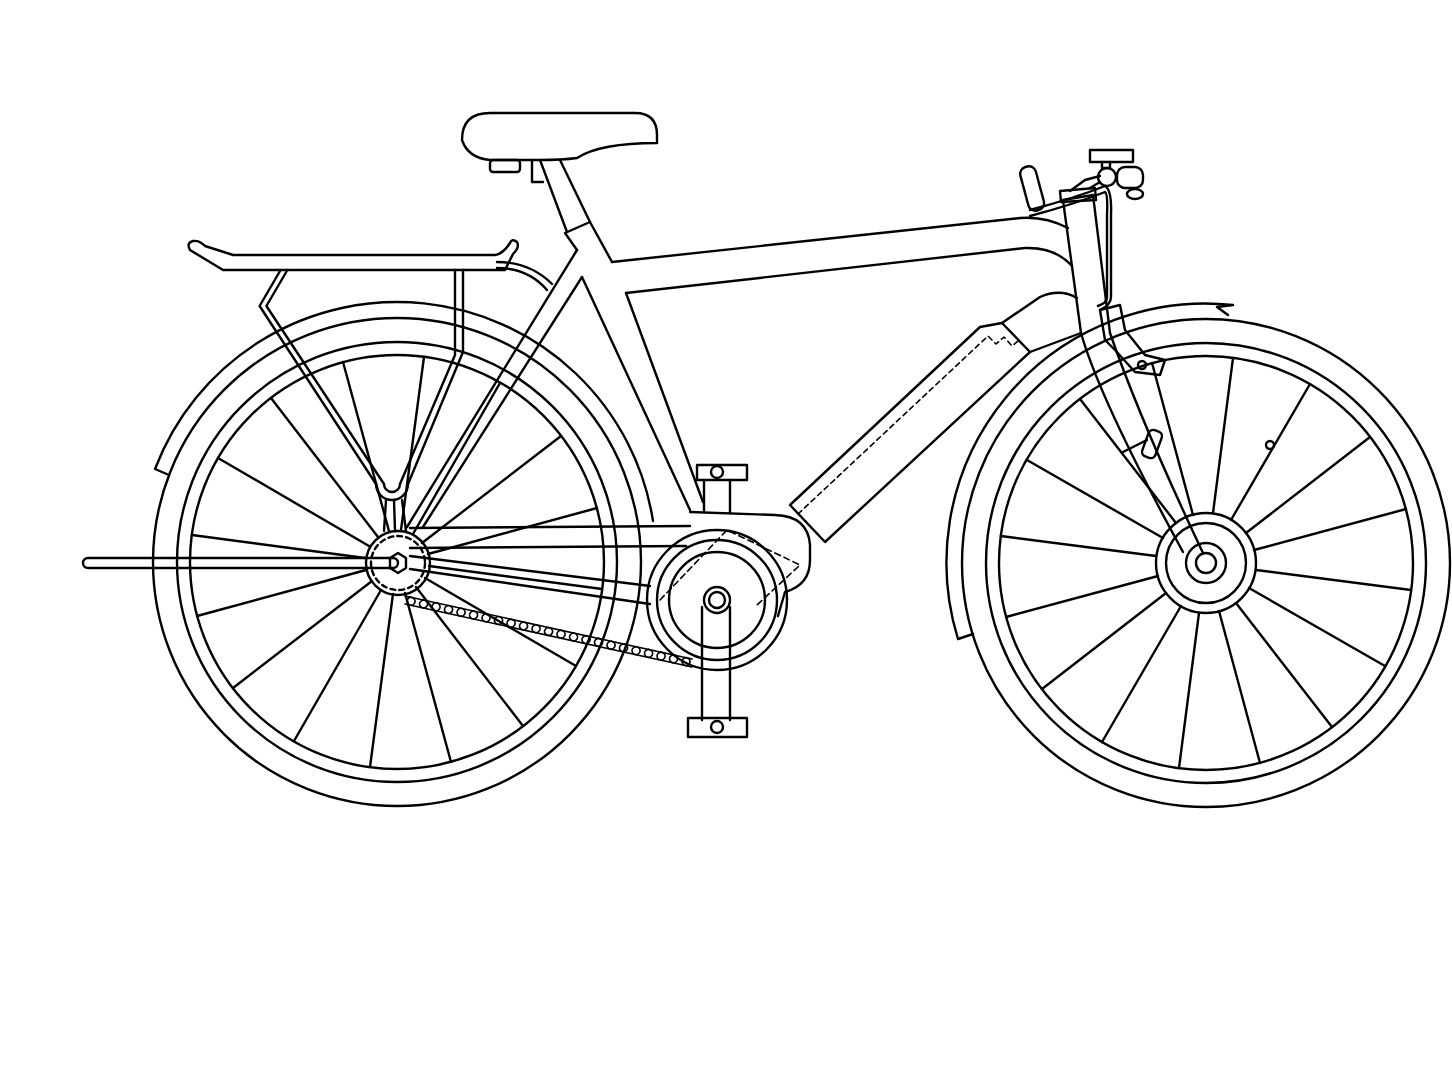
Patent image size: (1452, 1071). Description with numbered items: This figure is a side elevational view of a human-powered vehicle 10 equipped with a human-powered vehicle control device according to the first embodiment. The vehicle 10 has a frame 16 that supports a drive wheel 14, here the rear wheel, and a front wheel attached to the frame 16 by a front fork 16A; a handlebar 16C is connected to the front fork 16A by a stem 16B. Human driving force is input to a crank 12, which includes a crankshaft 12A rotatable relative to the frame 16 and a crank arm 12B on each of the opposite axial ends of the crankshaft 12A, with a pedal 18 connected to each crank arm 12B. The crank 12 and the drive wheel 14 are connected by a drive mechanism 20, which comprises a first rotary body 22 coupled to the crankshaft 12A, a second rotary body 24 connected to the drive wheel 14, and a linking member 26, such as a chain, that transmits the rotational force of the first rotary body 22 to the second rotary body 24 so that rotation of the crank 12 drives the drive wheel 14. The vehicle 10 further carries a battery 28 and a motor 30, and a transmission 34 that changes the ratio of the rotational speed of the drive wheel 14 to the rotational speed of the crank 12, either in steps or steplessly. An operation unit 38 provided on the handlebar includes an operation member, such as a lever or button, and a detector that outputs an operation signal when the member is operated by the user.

The human-powered vehicle 10 is at (1304, 148).
The crank 12 is at (865, 628).
The crankshaft 12A is at (720, 602).
The crank arm 12B is at (722, 696).
The drive wheel 14 is at (168, 520).
The frame 16 is at (756, 251).
The front fork 16A is at (1124, 410).
The stem 16B is at (1037, 183).
The handlebar 16C is at (1145, 177).
The pedal 18 is at (728, 464).
The drive mechanism 20 is at (861, 716).
The first rotary body 22 is at (780, 598).
The second rotary body 24 is at (372, 584).
The linking member 26 is at (651, 668).
The battery 28 is at (898, 402).
The motor 30 is at (806, 548).
The transmission 34 is at (370, 650).
The operation unit 38 is at (1108, 150).